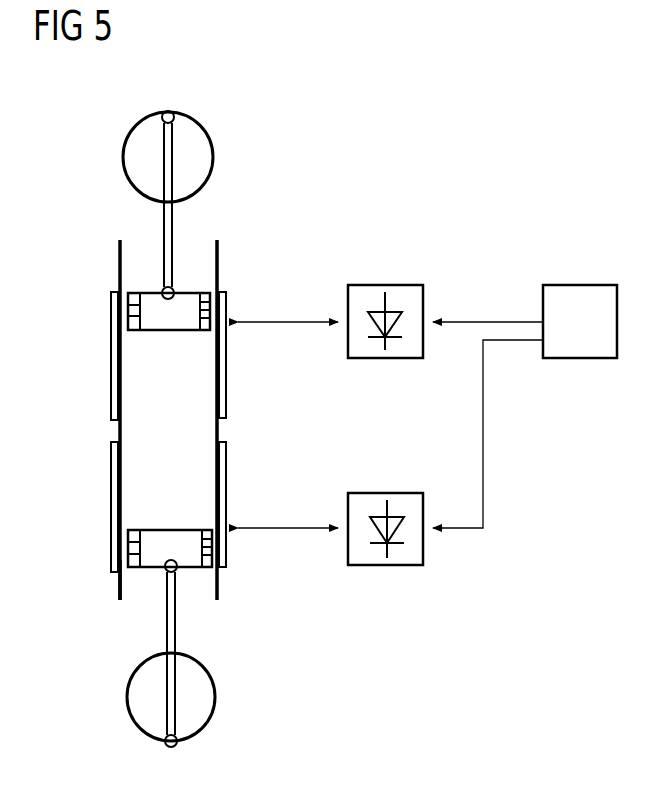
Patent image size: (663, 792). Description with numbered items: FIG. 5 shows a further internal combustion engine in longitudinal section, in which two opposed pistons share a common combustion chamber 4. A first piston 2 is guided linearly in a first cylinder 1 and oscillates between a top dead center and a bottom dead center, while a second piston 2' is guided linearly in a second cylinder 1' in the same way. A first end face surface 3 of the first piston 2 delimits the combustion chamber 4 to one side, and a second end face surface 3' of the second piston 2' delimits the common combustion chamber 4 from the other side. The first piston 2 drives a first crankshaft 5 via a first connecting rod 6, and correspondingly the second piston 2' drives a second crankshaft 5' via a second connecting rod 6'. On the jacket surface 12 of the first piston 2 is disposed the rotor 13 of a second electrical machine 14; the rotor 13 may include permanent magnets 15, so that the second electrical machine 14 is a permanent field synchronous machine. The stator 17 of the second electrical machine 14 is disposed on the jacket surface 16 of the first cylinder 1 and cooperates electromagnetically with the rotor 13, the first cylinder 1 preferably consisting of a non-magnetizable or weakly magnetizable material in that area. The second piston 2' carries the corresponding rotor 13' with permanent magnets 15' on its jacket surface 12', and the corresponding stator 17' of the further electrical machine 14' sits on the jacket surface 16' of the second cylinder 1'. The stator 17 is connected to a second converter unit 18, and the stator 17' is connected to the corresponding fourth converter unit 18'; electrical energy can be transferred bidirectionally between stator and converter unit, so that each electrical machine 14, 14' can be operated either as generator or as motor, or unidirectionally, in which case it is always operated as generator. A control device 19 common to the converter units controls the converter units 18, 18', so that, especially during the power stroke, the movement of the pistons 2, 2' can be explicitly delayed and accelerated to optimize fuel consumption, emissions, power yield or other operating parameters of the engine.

The first cylinder 1 is at (87, 420).
The second cylinder 1' is at (89, 580).
The first piston 2 is at (102, 315).
The second piston 2' is at (137, 593).
The first end face surface 3 is at (103, 356).
The second end face surface 3' is at (115, 507).
The combustion chamber 4 is at (200, 432).
The first crankshaft 5 is at (196, 153).
The second crankshaft 5' is at (206, 697).
The first connecting rod 6 is at (137, 205).
The second connecting rod 6' is at (205, 653).
The jacket surface of the first piston 12 is at (190, 276).
The jacket surface of the second piston 12' is at (212, 566).
The rotor of the second electrical machine 13 is at (223, 222).
The rotor of the corresponding electrical machine 13' is at (188, 473).
The second electrical machine 14 is at (67, 356).
The corresponding electrical machine 14' is at (66, 507).
The permanent magnets 15 is at (251, 297).
The permanent magnets 15' is at (256, 554).
The jacket surface of the first cylinder 16 is at (257, 355).
The jacket surface of the second cylinder 16' is at (258, 504).
The stator of the second electrical machine 17 is at (257, 355).
The stator of the corresponding electrical machine 17' is at (260, 504).
The second converter unit 18 is at (330, 284).
The fourth converter unit 18' is at (330, 570).
The control device 19 is at (580, 285).